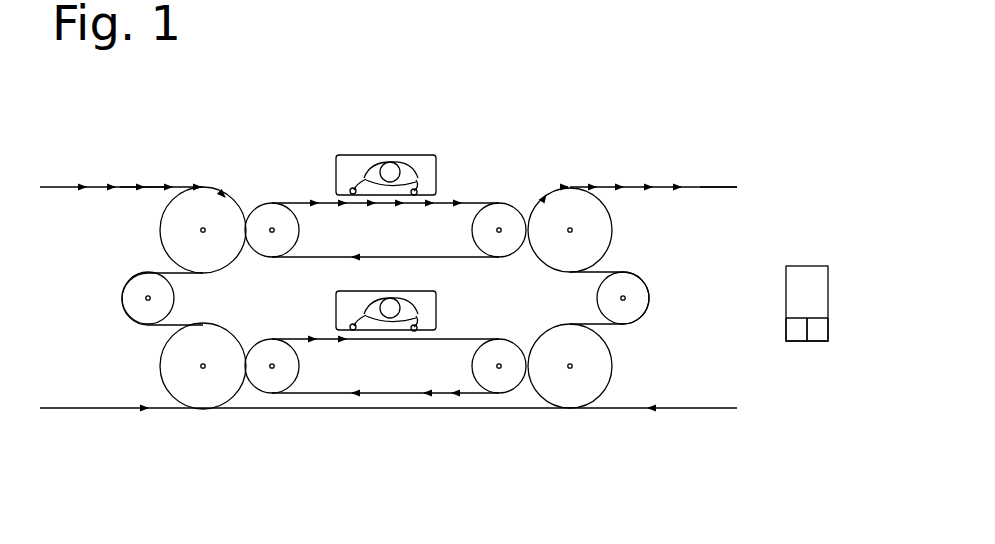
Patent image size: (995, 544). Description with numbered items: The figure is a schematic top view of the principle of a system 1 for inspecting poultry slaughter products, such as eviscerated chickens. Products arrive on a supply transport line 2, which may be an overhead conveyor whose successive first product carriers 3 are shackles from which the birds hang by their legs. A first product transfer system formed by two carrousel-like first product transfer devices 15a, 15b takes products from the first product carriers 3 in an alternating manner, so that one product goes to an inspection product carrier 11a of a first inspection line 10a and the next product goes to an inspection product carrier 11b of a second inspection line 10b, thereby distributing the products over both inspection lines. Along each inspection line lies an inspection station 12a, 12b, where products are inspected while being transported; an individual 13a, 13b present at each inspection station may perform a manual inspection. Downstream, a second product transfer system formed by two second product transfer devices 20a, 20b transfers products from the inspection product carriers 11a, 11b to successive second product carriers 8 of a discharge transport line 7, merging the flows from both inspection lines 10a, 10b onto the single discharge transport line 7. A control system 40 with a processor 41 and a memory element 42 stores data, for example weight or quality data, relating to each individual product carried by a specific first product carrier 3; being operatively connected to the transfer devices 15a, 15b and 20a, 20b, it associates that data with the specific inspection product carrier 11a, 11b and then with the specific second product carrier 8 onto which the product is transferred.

The system 1 is at (764, 170).
The supply transport line 2 is at (77, 180).
The first product carriers 3 is at (144, 187).
The discharge transport line 7 is at (675, 162).
The second product carriers 8 is at (626, 186).
The first inspection line 10a is at (385, 198).
The second inspection line 10b is at (375, 378).
The inspection product carriers 11a is at (464, 201).
The inspection product carriers 11b is at (314, 336).
The inspection station 12a is at (409, 146).
The inspection station 12b is at (454, 310).
The individual 13a is at (384, 172).
The individual 13b is at (388, 306).
The first product transfer device 15a is at (219, 182).
The first product transfer device 15b is at (206, 420).
The second product transfer device 20a is at (560, 178).
The second product transfer device 20b is at (576, 420).
The control system 40 is at (786, 300).
The processor 41 is at (790, 333).
The memory element 42 is at (816, 338).